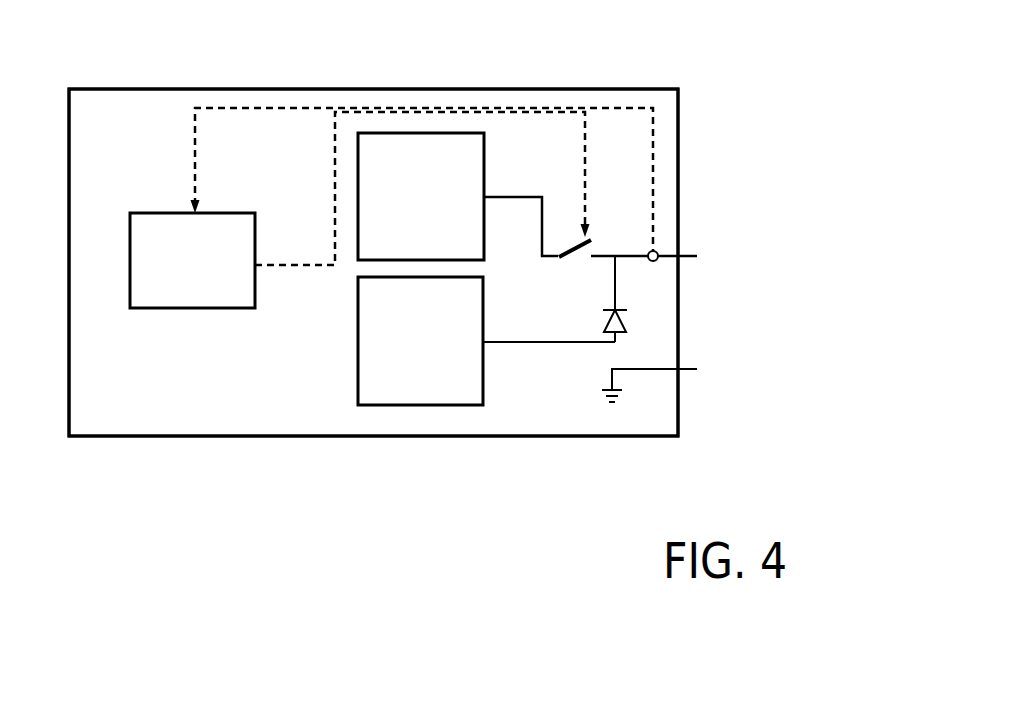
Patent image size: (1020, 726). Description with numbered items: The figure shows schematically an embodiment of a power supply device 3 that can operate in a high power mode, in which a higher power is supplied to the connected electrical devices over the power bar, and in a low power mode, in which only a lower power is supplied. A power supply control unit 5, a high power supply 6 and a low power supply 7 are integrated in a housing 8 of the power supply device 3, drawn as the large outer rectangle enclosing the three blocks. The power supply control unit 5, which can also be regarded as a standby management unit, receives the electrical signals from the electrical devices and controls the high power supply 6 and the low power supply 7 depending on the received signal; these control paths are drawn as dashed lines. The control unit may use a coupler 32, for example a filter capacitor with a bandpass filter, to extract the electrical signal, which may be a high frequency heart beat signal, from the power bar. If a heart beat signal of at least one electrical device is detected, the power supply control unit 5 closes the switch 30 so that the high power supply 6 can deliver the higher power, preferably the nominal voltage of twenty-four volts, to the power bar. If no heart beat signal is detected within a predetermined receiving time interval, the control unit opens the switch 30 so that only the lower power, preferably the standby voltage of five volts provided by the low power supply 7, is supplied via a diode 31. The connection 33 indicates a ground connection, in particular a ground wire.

The power supply device 3 is at (307, 505).
The power supply control unit 5 is at (130, 257).
The high power supply 6 is at (421, 133).
The low power supply 7 is at (426, 405).
The housing 8 is at (215, 436).
The switch 30 is at (600, 207).
The diode 31 is at (640, 313).
The coupler 32 is at (672, 243).
The connection 33 is at (695, 387).